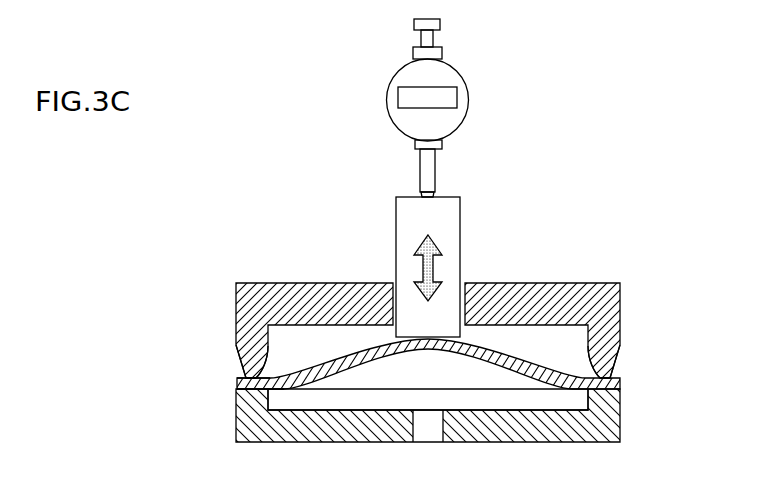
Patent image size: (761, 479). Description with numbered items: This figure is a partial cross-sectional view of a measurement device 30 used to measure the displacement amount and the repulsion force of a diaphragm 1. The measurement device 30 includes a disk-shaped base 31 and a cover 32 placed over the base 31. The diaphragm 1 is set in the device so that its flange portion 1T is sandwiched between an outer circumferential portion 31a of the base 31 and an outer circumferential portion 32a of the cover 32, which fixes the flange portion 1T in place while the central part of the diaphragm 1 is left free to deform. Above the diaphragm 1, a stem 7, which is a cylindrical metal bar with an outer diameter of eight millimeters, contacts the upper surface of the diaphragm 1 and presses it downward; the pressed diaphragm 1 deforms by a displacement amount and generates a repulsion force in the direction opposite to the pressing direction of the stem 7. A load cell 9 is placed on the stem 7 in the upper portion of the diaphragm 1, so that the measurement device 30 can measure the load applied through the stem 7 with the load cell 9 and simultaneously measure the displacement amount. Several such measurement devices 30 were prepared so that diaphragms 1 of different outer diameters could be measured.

The diaphragm 1 is at (385, 300).
The flange portion 1T is at (237, 383).
The stem 7 is at (458, 225).
The load cell 9 is at (460, 73).
The measurement device 30 is at (480, 325).
The base 31 is at (479, 427).
The outer circumferential portion of the base 31a is at (610, 398).
The cover 32 is at (480, 304).
The outer circumferential portion of the cover 32a is at (617, 364).